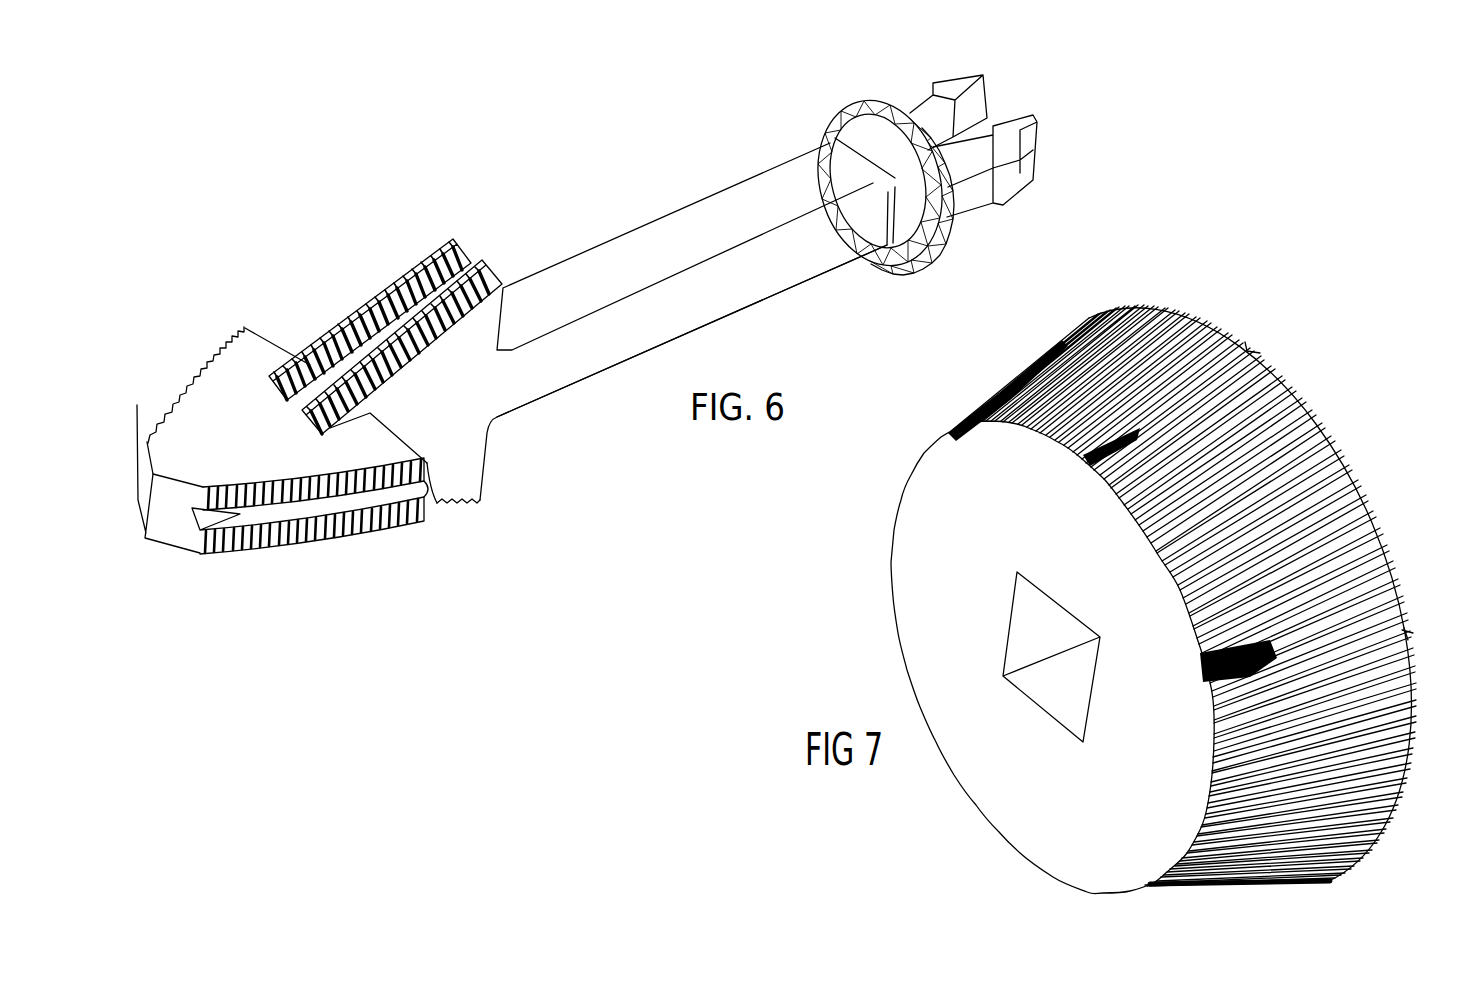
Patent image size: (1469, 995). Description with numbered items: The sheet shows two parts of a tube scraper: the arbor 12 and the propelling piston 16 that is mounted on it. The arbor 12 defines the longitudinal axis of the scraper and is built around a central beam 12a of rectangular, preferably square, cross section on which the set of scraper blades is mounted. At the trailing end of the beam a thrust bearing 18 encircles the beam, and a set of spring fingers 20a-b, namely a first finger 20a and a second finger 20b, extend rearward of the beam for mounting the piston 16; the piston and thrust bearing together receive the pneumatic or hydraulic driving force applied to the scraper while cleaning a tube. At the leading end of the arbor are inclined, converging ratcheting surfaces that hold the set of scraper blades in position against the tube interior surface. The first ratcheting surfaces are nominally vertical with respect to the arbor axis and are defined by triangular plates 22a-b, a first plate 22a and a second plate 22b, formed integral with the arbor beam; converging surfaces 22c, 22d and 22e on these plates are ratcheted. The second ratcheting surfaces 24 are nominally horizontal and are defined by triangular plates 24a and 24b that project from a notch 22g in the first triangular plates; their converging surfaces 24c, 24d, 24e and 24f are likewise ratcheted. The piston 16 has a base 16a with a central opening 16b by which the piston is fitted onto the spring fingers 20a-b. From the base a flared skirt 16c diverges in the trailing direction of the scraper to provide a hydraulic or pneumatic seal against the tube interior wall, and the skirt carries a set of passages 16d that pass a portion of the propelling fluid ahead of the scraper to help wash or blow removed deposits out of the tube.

In FIG. 6, the arbor 12 is at (661, 320).
In FIG. 6, the central beam 12a is at (642, 323).
In FIG. 6, the thrust bearing 18 is at (845, 112).
In FIG. 6, the spring fingers 20a-b is at (999, 140).
In FIG. 6, the spring finger 20a is at (948, 112).
In FIG. 6, the spring finger 20b is at (1037, 120).
In FIG. 6, the first triangular plates 22a-b is at (412, 304).
In FIG. 6, the first triangular plate 22a is at (399, 347).
In FIG. 6, the first triangular plate 22b is at (370, 312).
In FIG. 6, the converging surface 22c is at (376, 302).
In FIG. 6, the converging surface 22d is at (323, 350).
In FIG. 6, the converging surface 22e is at (472, 505).
In FIG. 6, the notch 22g is at (370, 413).
In FIG. 6, the second ratcheting surfaces 24 is at (301, 478).
In FIG. 6, the second triangular plate 24a is at (231, 407).
In FIG. 6, the second triangular plate 24b is at (241, 560).
In FIG. 6, the converging surface 24c is at (212, 352).
In FIG. 6, the converging surface 24d is at (421, 497).
In FIG. 6, the converging surface 24e is at (322, 556).
In FIG. 6, the converging surface 24f is at (167, 464).
In FIG. 7, the piston 16 is at (1153, 576).
In FIG. 7, the base 16a is at (965, 551).
In FIG. 7, the central opening 16b is at (1012, 622).
In FIG. 7, the flared skirt 16c is at (1020, 375).
In FIG. 7, the passages 16d is at (1253, 341).